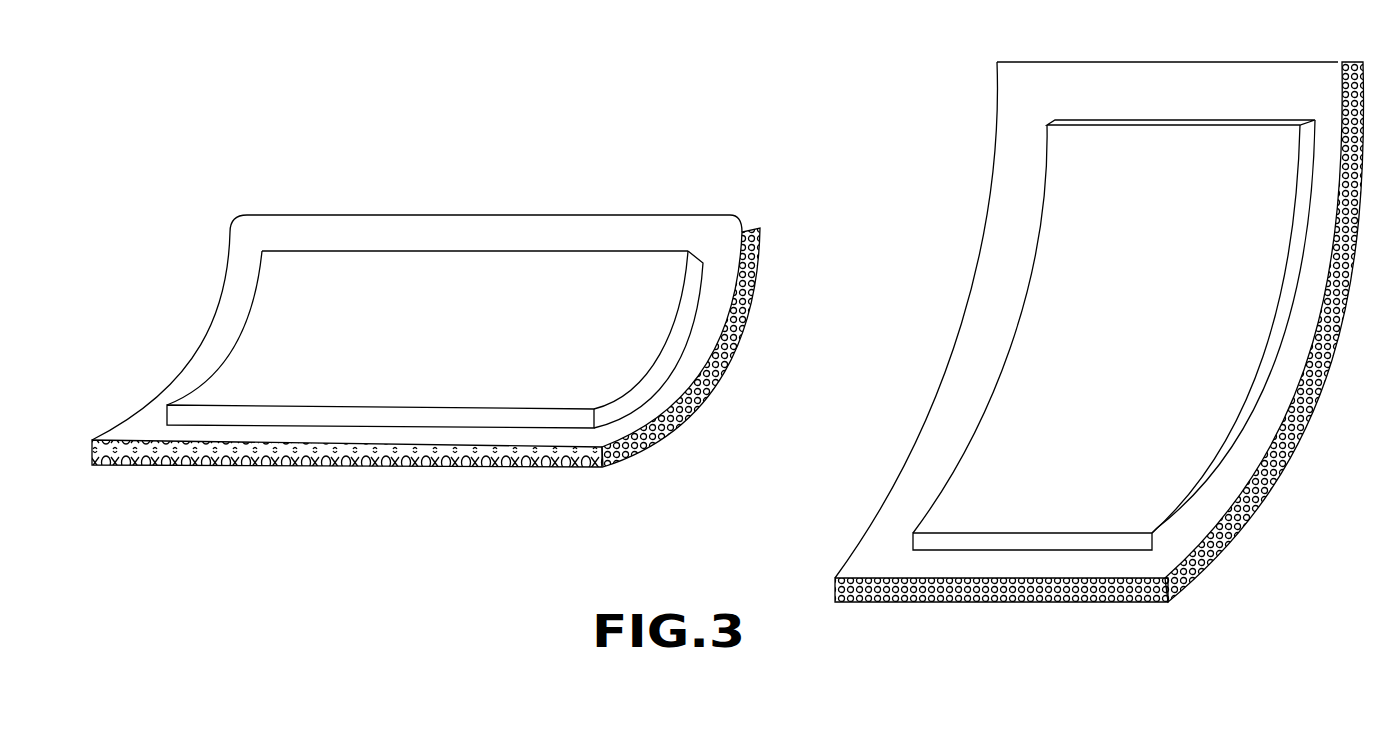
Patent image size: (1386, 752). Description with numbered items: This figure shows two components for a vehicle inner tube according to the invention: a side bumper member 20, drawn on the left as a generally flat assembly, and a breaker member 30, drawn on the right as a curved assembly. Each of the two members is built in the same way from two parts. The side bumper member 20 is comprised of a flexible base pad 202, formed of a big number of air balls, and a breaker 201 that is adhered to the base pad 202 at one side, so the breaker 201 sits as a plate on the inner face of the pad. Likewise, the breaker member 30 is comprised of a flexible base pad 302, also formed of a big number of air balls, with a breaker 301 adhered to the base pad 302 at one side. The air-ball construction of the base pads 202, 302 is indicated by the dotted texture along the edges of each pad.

The side bumper member 20 is at (199, 236).
The breaker 201 is at (460, 278).
The flexible base pad 202 is at (687, 237).
The breaker member 30 is at (924, 398).
The breaker 301 is at (1052, 298).
The flexible base pad 302 is at (1015, 212).